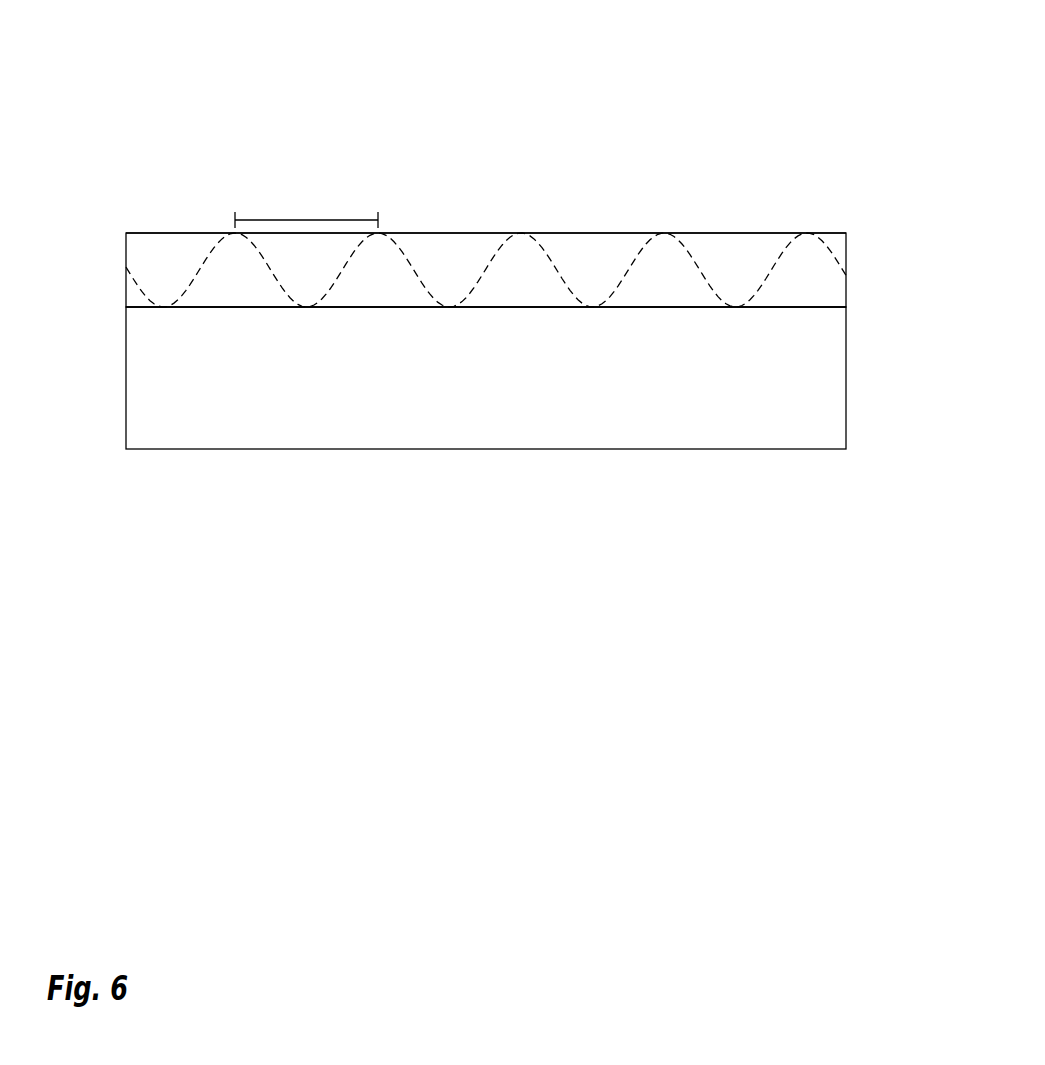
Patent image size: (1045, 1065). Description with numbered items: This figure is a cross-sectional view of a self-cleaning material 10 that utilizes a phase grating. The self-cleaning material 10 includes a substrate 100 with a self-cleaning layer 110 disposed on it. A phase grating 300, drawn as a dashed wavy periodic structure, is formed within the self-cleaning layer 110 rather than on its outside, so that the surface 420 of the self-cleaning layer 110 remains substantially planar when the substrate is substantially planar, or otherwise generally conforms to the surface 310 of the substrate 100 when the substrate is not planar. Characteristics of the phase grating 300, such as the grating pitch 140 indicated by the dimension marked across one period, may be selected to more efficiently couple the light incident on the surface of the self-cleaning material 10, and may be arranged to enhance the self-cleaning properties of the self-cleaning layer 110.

The self-cleaning material 10 is at (523, 228).
The substrate 100 is at (505, 391).
The self-cleaning layer 110 is at (468, 272).
The grating pitch 140 is at (312, 215).
The phase grating 300 is at (700, 262).
The surface of the substrate 310 is at (817, 306).
The surface of the self-cleaning layer 420 is at (625, 231).